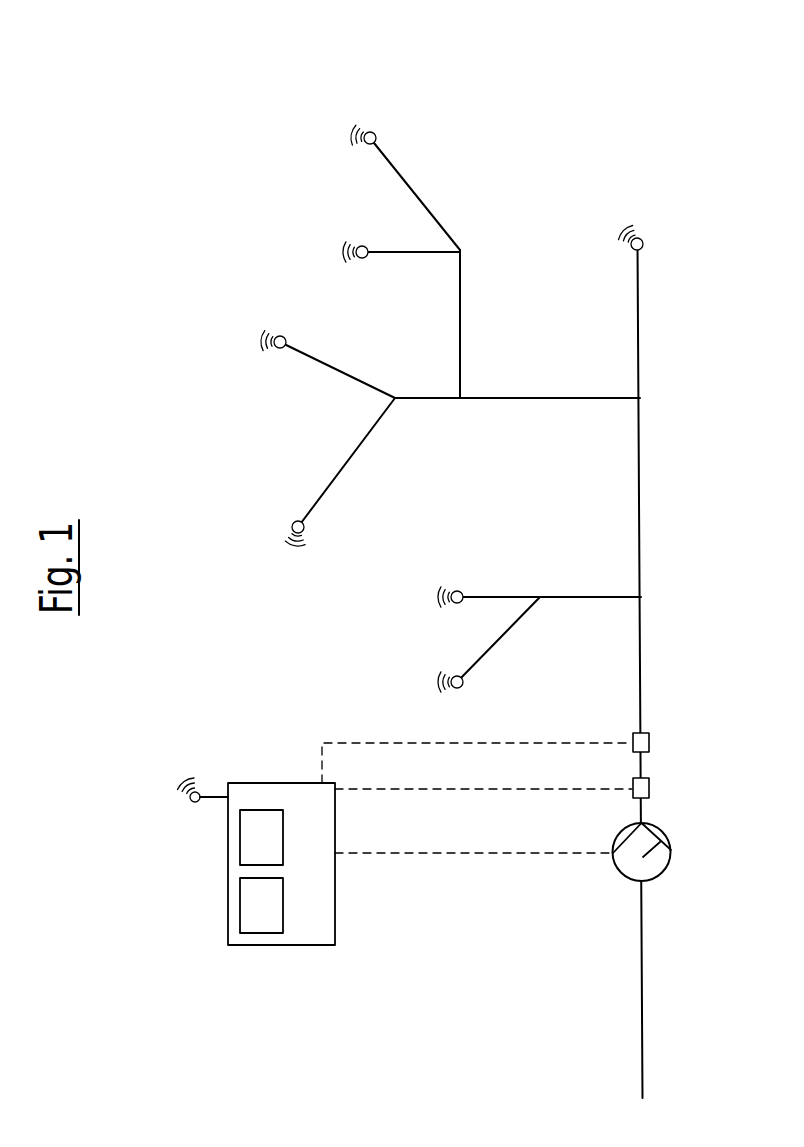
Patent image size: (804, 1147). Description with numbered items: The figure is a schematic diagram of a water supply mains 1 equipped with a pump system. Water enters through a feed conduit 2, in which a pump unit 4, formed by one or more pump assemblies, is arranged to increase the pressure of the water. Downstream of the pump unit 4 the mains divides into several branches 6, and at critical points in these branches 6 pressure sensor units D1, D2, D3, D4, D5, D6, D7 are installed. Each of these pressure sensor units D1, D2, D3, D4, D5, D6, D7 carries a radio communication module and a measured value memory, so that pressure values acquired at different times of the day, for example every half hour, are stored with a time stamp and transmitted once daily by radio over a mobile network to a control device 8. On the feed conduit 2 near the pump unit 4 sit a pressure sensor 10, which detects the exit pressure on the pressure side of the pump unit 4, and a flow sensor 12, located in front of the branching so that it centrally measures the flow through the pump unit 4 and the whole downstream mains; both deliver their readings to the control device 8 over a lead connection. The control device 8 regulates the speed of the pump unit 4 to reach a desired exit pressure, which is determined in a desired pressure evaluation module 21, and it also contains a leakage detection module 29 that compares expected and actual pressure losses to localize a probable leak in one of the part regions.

The water supply mains 1 is at (190, 361).
The feed conduit 2 is at (643, 1010).
The pump unit 4 is at (668, 835).
The branches 6 is at (390, 248).
The control device 8 is at (227, 913).
The pressure sensor 10 is at (650, 780).
The flow sensor 12 is at (650, 732).
The desired pressure evaluation module 21 is at (258, 810).
The leakage detection module 29 is at (262, 933).
The pressure sensor unit D1 is at (628, 240).
The pressure sensor unit D2 is at (365, 128).
The pressure sensor unit D3 is at (353, 243).
The pressure sensor unit D4 is at (273, 332).
The pressure sensor unit D5 is at (288, 518).
The pressure sensor unit D6 is at (452, 588).
The pressure sensor unit D7 is at (450, 673).